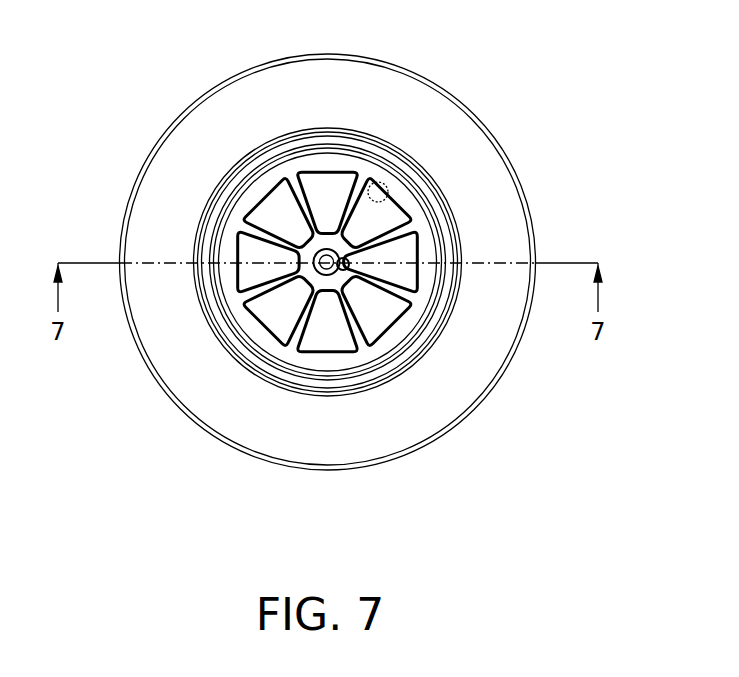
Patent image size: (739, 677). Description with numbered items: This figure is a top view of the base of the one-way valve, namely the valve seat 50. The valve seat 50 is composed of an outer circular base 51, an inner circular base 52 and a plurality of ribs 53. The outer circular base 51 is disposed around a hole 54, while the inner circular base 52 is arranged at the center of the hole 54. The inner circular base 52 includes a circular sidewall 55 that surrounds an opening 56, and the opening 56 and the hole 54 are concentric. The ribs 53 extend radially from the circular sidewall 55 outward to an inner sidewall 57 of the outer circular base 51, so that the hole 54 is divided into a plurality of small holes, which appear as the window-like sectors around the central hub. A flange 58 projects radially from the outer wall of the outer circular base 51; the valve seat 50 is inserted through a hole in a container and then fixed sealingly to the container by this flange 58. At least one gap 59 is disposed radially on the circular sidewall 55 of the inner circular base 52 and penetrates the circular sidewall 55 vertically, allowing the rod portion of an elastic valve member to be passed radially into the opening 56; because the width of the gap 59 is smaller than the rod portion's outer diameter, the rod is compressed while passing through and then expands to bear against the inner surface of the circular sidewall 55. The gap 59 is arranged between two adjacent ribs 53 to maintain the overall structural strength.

The valve seat 50 is at (533, 82).
The outer circular base 51 is at (247, 198).
The inner circular base 52 is at (243, 227).
The ribs 53 is at (423, 168).
The hole 54 is at (323, 187).
The circular sidewall 55 is at (323, 290).
The opening 56 is at (352, 288).
The inner sidewall 57 is at (371, 181).
The flange 58 is at (240, 103).
The gap 59 is at (345, 263).